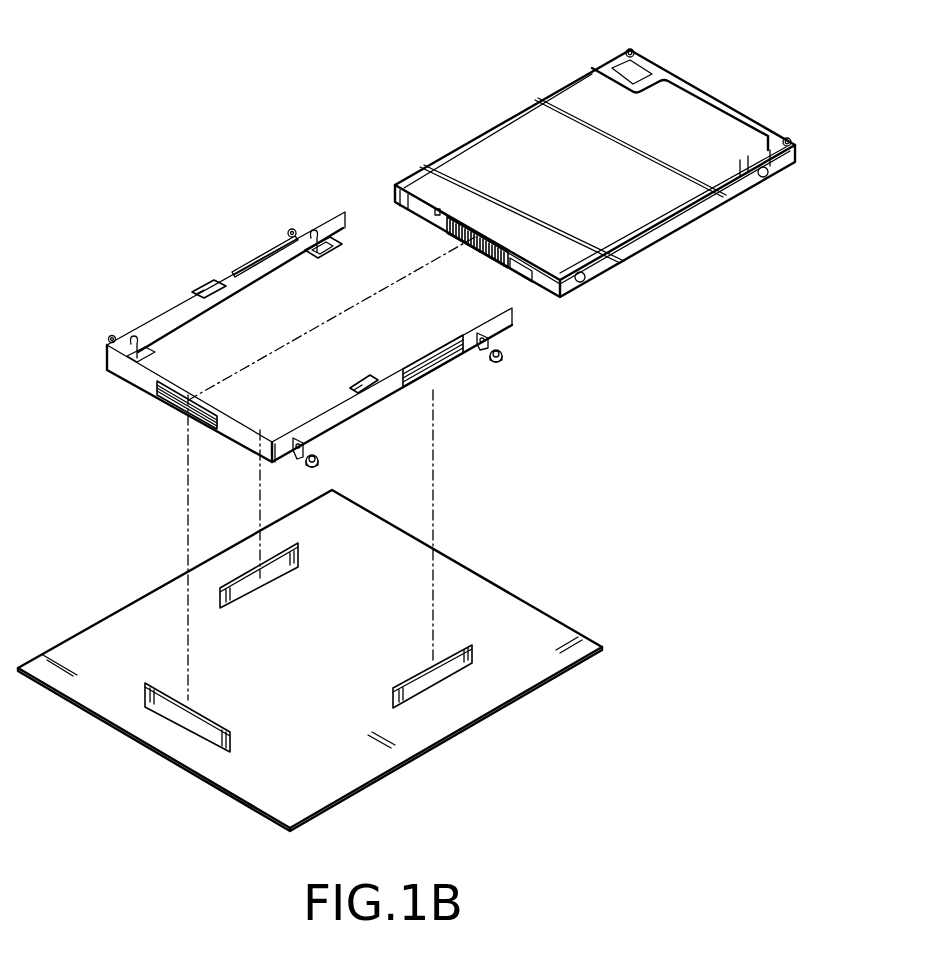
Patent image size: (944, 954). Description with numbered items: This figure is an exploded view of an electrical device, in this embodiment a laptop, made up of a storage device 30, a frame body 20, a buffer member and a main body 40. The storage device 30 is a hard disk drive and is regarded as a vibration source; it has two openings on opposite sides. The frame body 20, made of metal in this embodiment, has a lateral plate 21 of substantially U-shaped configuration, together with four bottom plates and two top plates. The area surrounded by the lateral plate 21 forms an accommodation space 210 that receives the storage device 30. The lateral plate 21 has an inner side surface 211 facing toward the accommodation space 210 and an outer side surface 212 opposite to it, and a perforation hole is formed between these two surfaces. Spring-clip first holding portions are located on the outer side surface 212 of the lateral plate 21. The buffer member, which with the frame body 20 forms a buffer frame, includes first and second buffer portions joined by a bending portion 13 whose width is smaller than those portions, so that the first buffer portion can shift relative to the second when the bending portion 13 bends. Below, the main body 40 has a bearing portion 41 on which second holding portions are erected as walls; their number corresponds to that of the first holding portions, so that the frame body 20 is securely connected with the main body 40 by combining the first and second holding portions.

The bending portion 13 is at (308, 466).
The frame body 20 is at (313, 348).
The lateral plate 21 is at (365, 427).
The storage device 30 is at (602, 173).
The main body 40 is at (317, 660).
The bearing portion 41 is at (548, 668).
The accommodation space 210 is at (492, 345).
The inner side surface 211 is at (168, 323).
The outer side surface 212 is at (306, 446).